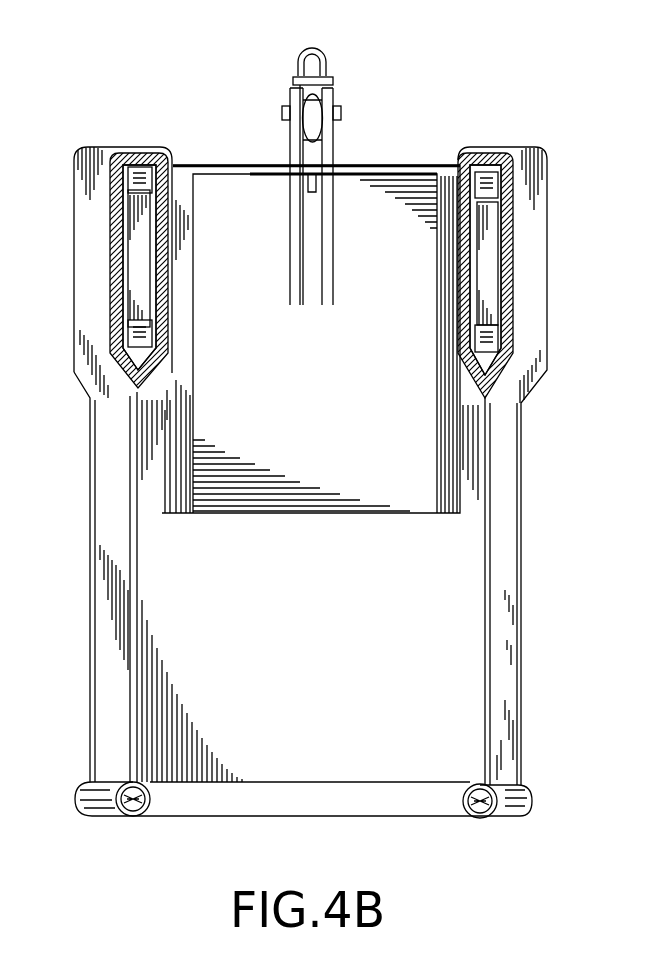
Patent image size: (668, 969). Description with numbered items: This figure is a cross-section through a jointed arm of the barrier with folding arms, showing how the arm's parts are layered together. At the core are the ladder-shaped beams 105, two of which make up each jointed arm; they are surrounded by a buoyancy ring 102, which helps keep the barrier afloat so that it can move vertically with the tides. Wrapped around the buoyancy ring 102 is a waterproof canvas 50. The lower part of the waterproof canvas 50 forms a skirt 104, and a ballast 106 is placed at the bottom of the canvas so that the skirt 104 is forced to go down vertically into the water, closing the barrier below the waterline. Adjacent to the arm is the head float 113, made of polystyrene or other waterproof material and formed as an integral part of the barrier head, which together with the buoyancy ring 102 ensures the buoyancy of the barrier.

The waterproof canvas 50 is at (523, 153).
The buoyancy ring 102 is at (513, 327).
The skirt 104 is at (502, 548).
The ladder-shaped beam 105 is at (490, 268).
The ballast 106 is at (488, 820).
The head float 113 is at (368, 213).